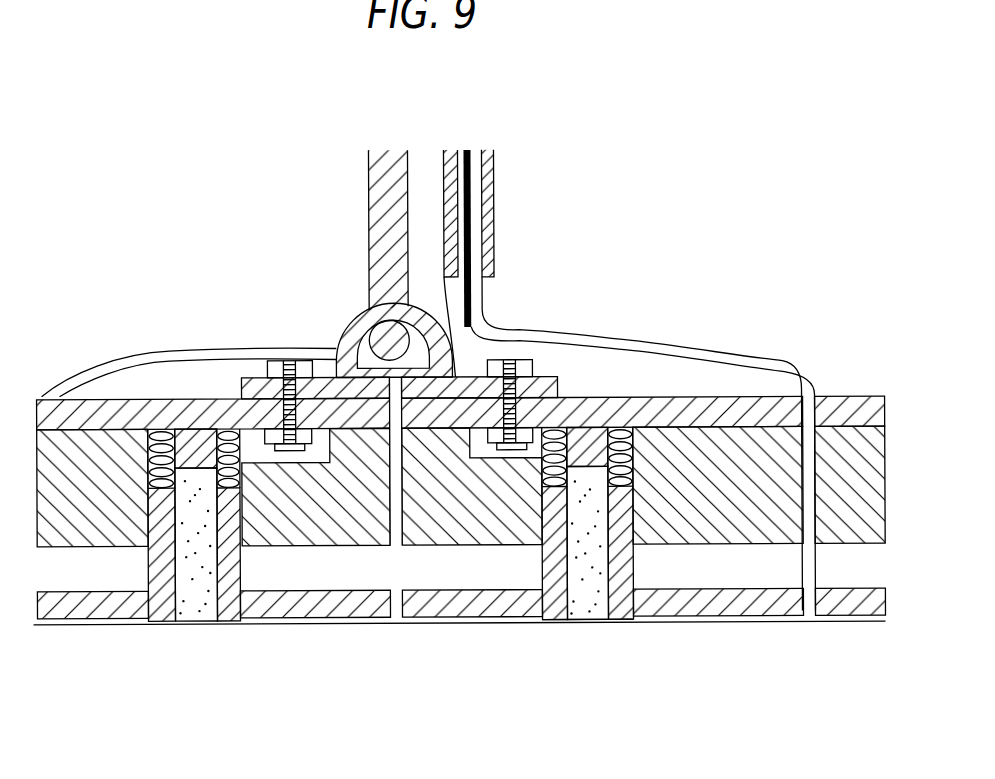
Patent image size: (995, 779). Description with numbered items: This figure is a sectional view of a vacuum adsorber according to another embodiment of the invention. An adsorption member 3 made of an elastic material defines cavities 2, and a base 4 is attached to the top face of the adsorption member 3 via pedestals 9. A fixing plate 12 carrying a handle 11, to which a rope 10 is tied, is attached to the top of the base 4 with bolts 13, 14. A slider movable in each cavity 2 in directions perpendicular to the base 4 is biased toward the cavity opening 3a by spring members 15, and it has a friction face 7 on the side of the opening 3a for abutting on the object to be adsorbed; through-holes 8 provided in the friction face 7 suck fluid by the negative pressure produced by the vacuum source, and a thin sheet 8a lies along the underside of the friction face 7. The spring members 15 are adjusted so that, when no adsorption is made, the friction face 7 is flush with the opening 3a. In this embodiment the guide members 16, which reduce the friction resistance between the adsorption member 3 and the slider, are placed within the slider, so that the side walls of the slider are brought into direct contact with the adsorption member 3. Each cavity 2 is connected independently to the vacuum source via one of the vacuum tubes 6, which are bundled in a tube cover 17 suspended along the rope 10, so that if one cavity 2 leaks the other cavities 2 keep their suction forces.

The cavity 2 is at (292, 570).
The adsorption member 3 is at (197, 612).
The cavity opening 3a is at (553, 622).
The base 4 is at (720, 407).
The vacuum tube 6 is at (195, 352).
The friction face 7 is at (251, 624).
The through-hole 8 is at (395, 612).
The bottom sheet 8a is at (339, 624).
The pedestal 9 is at (617, 397).
The rope 10 is at (383, 190).
The handle 11 is at (350, 320).
The fixing plate 12 is at (545, 380).
The bolt 13 is at (283, 416).
The bolt 14 is at (275, 367).
The spring member 15 is at (217, 467).
The guide member 16 is at (458, 522).
The tube cover 17 is at (494, 173).